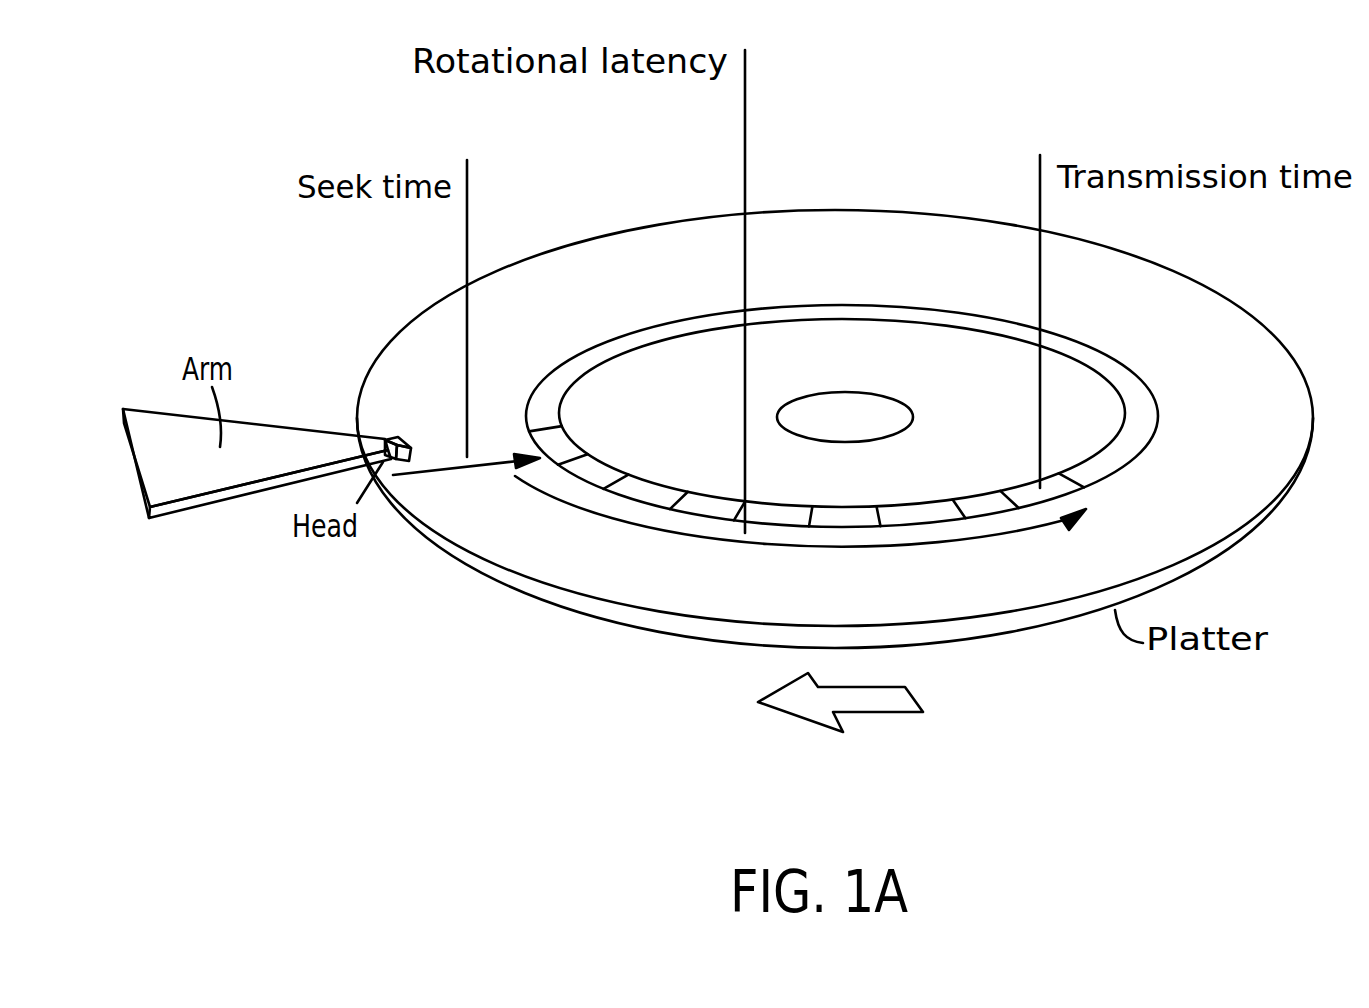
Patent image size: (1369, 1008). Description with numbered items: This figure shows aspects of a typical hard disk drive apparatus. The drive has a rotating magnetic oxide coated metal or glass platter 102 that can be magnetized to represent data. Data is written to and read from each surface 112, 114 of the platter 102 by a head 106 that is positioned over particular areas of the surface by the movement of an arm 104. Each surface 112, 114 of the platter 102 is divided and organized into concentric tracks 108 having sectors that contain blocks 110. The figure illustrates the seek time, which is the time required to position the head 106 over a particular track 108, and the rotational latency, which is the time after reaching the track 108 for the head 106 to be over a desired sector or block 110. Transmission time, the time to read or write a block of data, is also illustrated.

The platter 102 is at (1210, 552).
The arm 104 is at (165, 487).
The head 106 is at (400, 438).
The track 108 is at (810, 306).
The block 110 is at (693, 507).
The surface 112 is at (668, 588).
The surface 114 is at (733, 653).